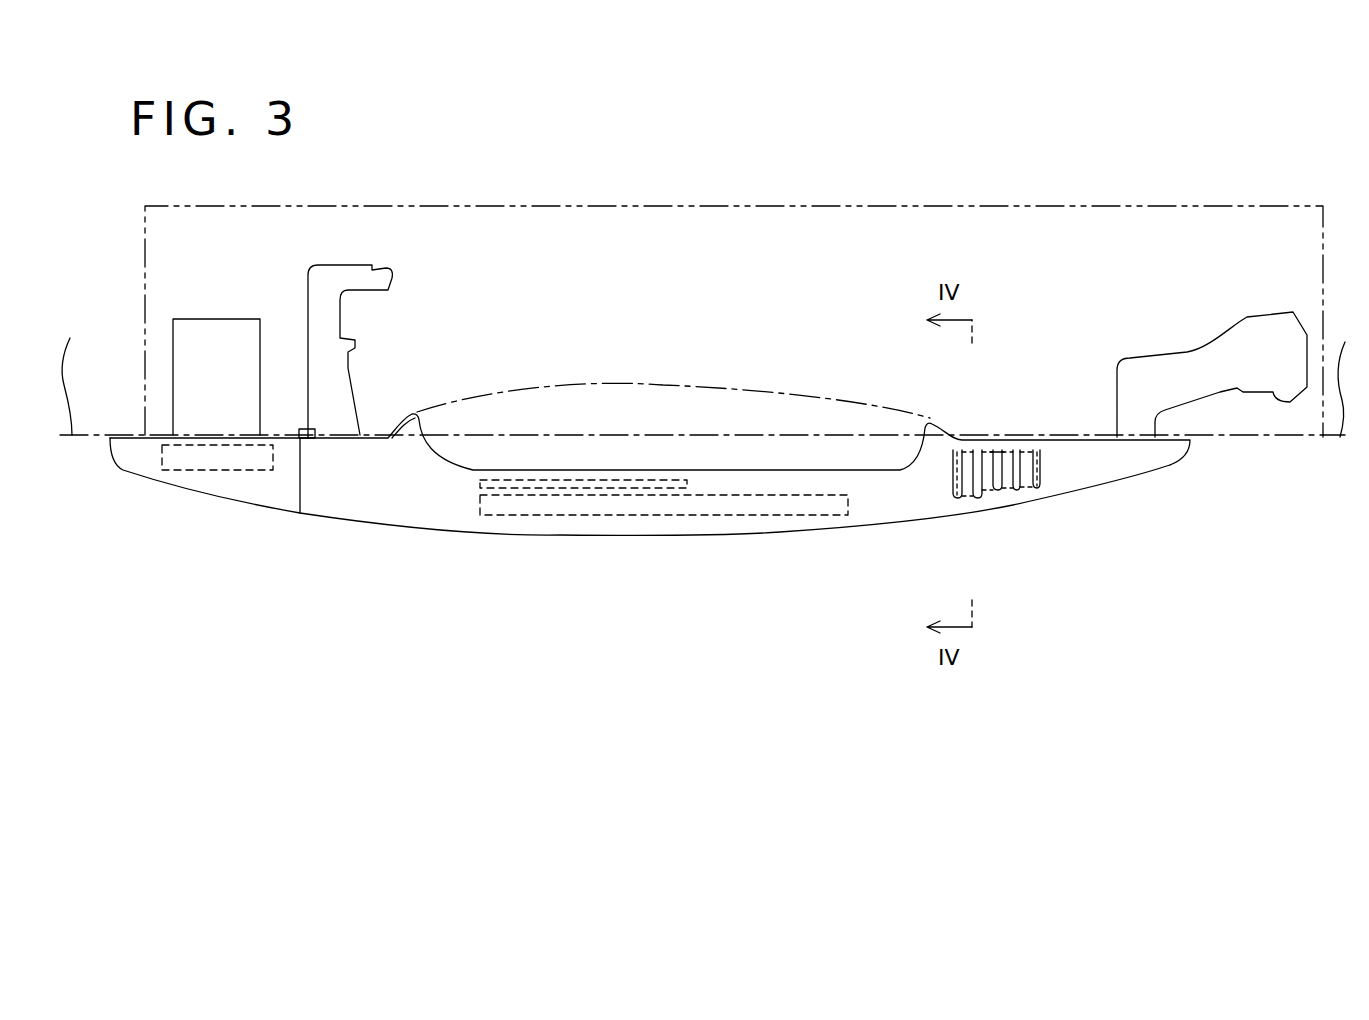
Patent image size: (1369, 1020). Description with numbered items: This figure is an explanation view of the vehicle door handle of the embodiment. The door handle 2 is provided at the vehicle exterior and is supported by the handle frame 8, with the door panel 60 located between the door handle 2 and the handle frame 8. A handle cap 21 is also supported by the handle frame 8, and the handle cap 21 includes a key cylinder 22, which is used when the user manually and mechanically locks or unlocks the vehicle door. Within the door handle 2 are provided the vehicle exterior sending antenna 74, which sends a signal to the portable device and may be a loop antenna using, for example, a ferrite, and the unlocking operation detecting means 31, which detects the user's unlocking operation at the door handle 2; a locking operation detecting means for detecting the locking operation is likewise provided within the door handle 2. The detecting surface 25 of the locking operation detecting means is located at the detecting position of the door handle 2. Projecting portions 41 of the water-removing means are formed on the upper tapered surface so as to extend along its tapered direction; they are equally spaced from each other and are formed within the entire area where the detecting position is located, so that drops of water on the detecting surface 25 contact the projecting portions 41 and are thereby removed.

The handle frame 8 is at (1123, 208).
The door handle 2 is at (797, 533).
The handle cap 21 is at (225, 487).
The key cylinder 22 is at (185, 357).
The unlocking operation detecting means 31 is at (545, 477).
The vehicle exterior sending antenna 74 is at (578, 515).
The projecting portions 41 is at (1020, 450).
The detecting surface 25 is at (1005, 493).
The door panel 60 is at (1223, 438).